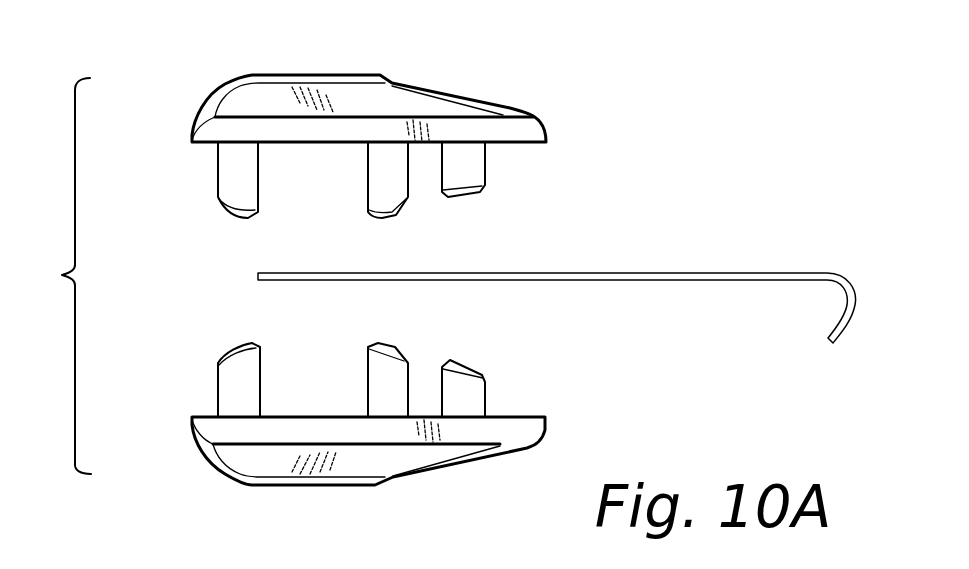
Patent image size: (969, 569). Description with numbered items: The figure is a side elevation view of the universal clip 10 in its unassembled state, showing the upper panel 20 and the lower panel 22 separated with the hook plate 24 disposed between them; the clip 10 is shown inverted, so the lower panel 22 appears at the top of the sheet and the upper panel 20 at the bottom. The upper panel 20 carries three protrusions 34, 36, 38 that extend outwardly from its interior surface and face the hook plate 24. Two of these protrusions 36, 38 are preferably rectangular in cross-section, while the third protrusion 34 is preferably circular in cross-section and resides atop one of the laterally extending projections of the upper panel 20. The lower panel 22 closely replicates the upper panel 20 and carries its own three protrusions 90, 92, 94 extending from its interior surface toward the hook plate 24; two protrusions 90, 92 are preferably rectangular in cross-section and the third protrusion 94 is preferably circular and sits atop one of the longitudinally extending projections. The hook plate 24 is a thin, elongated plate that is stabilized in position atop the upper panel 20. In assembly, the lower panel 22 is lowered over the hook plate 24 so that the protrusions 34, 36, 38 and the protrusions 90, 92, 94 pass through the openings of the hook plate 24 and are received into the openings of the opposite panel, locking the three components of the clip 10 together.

The universal clip 10 is at (56, 276).
The upper panel 20 is at (447, 467).
The lower panel 22 is at (507, 108).
The hook plate 24 is at (855, 298).
The third protrusion 34 is at (468, 362).
The protrusion 36 is at (398, 354).
The protrusion 38 is at (218, 383).
The protrusion 90 is at (218, 183).
The protrusion 92 is at (368, 195).
The third protrusion 94 is at (470, 193).